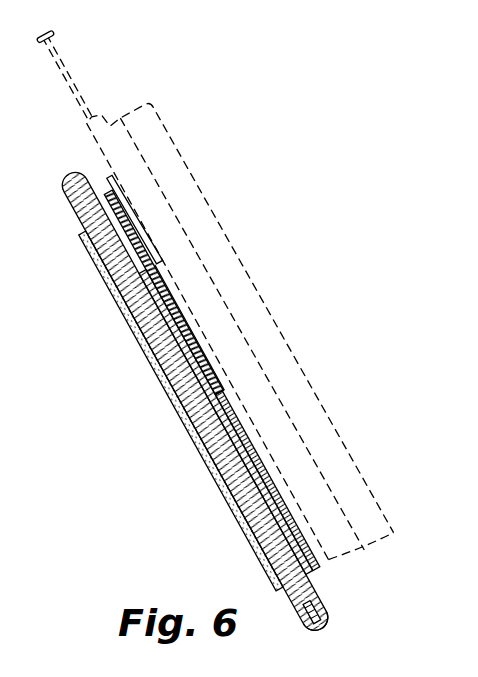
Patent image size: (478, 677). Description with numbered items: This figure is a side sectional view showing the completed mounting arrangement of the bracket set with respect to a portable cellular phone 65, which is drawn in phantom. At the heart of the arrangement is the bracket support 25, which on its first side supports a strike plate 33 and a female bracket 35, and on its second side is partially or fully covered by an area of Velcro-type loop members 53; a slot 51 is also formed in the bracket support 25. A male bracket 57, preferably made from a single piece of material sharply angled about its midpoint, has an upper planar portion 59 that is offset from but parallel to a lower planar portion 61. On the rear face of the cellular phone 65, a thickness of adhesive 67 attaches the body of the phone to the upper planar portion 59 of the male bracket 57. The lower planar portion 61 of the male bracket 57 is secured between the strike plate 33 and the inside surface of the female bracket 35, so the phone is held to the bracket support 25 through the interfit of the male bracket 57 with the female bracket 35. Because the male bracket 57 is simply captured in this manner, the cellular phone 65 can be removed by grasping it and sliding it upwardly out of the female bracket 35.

The bracket support 25 is at (333, 618).
The strike plate 33 is at (260, 497).
The female bracket 35 is at (170, 336).
The slot 51 is at (312, 610).
The loop members 53 is at (208, 465).
The male bracket 57 is at (122, 264).
The upper planar portion 59 is at (127, 212).
The lower planar portion 61 is at (203, 387).
The portable cellular phone 65 is at (183, 143).
The adhesive 67 is at (112, 218).